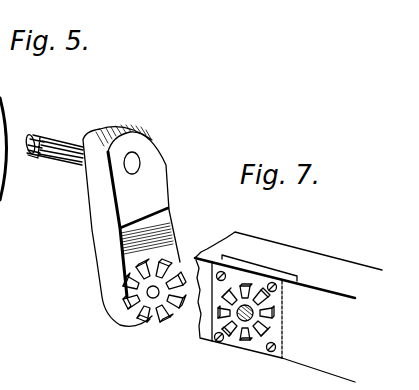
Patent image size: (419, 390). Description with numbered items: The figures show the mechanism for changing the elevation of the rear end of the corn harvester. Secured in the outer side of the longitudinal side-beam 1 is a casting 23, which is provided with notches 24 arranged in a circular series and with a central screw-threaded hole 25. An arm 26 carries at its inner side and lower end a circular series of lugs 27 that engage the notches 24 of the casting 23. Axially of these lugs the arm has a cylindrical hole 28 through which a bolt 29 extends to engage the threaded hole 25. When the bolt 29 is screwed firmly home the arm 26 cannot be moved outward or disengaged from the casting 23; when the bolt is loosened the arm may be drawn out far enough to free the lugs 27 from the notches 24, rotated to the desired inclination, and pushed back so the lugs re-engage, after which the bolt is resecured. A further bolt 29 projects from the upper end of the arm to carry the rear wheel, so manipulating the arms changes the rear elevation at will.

In FIG. 7, the longitudinal side-beam 1 is at (313, 260).
In FIG. 7, the casting 23 is at (249, 262).
In FIG. 7, the notches 24 is at (246, 343).
In FIG. 7, the screw-threaded hole 25 is at (237, 316).
In FIG. 5, the arm 26 is at (98, 244).
In FIG. 5, the lugs 27 is at (152, 318).
In FIG. 5, the cylindrical hole 28 is at (147, 292).
In FIG. 5, the bolt 29 is at (59, 141).